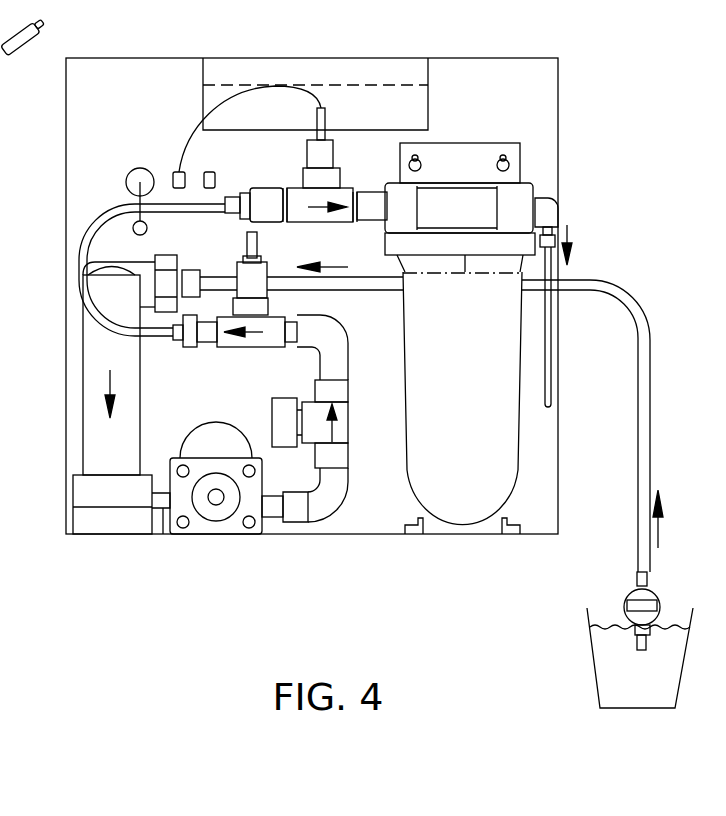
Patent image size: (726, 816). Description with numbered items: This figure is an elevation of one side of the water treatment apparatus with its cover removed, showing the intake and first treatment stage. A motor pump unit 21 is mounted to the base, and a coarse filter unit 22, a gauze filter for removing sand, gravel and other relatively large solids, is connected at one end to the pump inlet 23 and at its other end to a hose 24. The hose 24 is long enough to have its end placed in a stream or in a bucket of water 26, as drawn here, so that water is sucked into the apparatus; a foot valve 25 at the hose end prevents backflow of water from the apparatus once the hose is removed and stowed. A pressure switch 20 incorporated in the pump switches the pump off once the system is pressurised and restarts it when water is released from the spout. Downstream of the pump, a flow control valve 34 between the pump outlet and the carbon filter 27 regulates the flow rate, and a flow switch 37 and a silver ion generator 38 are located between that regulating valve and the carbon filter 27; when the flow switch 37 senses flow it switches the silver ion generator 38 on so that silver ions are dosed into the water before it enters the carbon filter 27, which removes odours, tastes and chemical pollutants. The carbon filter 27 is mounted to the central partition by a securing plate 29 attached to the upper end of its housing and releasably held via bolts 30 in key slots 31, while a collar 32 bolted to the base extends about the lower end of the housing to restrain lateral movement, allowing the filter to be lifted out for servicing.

The pressure switch 20 is at (278, 508).
The motor pump unit 21 is at (225, 505).
The coarse filter unit 22 is at (93, 425).
The pump inlet 23 is at (163, 532).
The hose 24 is at (647, 417).
The foot valve 25 is at (622, 610).
The bucket of water 26 is at (607, 655).
The carbon filter 27 is at (447, 510).
The securing plate 29 is at (482, 153).
The bolts 30 is at (505, 158).
The key slots 31 is at (520, 172).
The collar 32 is at (512, 523).
The flow control valve 34 is at (348, 437).
The flow switch 37 is at (262, 340).
The silver ion generator 38 is at (347, 199).